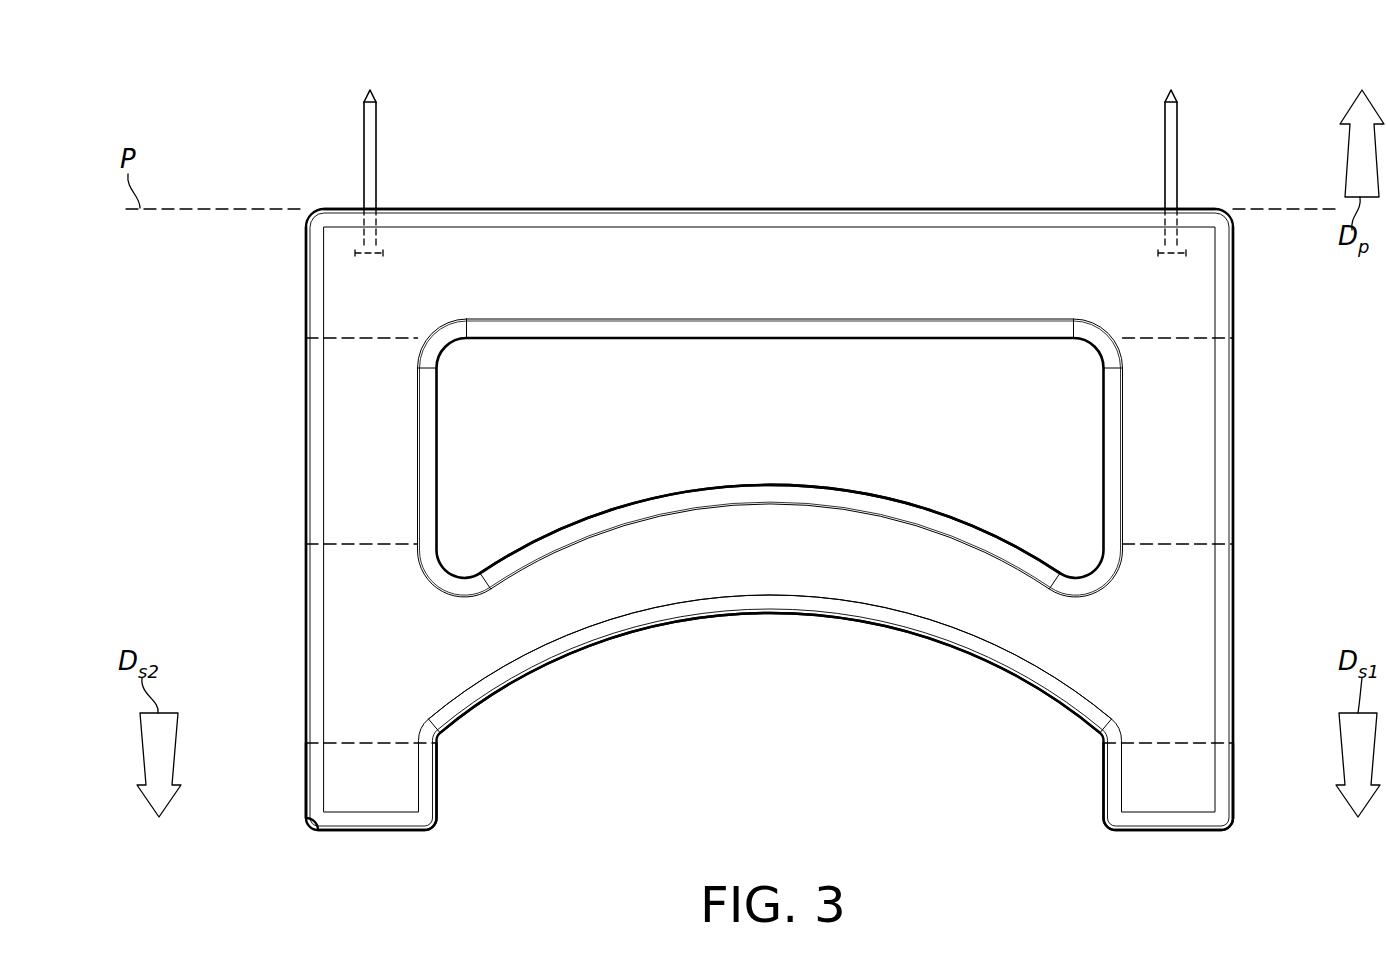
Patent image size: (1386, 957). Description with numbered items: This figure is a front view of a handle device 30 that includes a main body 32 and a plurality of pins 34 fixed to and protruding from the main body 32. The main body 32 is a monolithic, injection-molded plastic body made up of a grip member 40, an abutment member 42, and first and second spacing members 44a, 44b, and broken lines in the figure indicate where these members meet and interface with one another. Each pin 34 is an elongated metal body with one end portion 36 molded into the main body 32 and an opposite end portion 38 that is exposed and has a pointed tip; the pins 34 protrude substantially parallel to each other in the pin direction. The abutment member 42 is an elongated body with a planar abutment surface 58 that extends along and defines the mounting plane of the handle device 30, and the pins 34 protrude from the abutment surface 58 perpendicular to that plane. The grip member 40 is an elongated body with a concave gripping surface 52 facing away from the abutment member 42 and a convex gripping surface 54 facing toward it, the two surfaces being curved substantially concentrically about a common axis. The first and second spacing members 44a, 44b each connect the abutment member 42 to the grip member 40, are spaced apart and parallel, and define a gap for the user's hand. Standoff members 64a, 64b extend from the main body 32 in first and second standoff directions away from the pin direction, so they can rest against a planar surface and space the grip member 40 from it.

The handle device 30 is at (732, 416).
The main body 32 is at (1235, 378).
The pins 34 is at (364, 160).
The end portion 36 is at (383, 253).
The opposite end portion 38 is at (371, 95).
The grip member 40 is at (910, 637).
The abutment member 42 is at (637, 338).
The first spacing member 44a is at (306, 448).
The second spacing member 44b is at (1235, 475).
The concave gripping surface 52 is at (613, 645).
The convex gripping surface 54 is at (842, 487).
The abutment surface 58 is at (787, 207).
The first standoff member 64a is at (306, 778).
The second standoff member 64b is at (1103, 778).